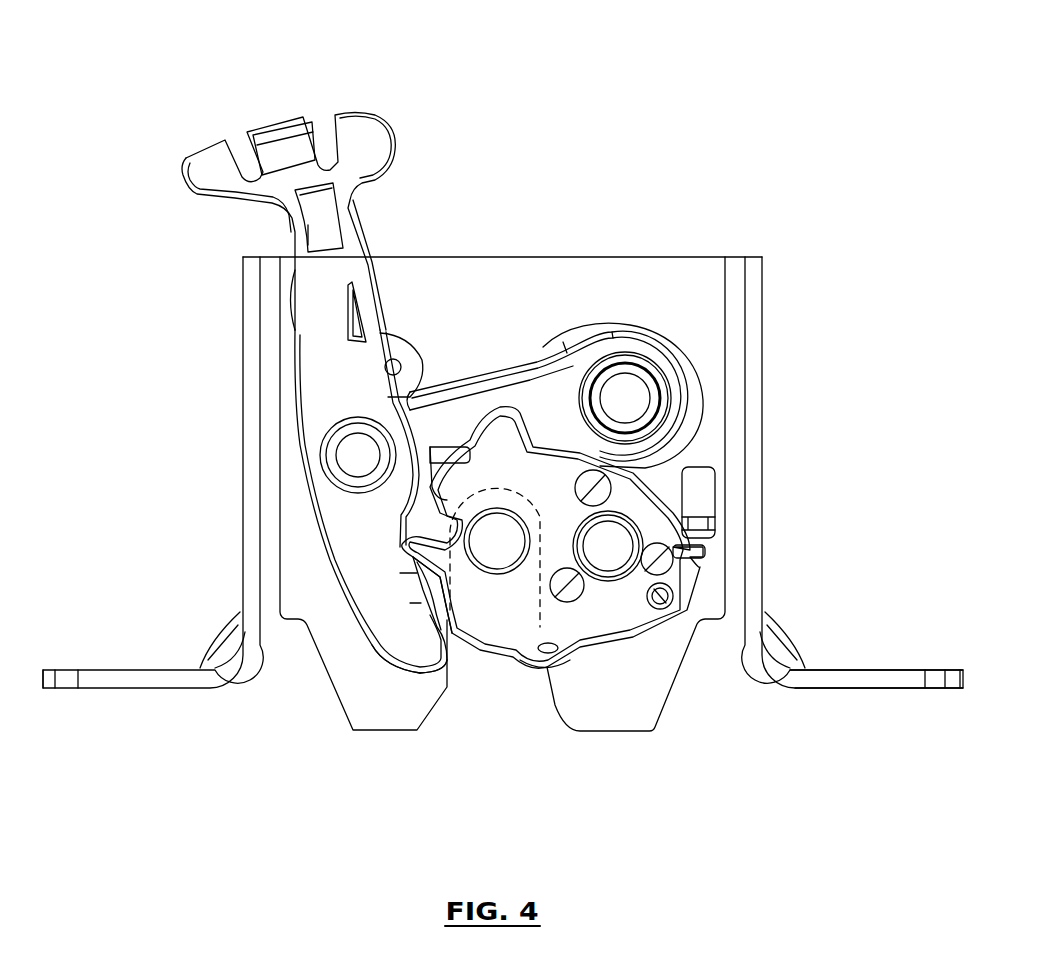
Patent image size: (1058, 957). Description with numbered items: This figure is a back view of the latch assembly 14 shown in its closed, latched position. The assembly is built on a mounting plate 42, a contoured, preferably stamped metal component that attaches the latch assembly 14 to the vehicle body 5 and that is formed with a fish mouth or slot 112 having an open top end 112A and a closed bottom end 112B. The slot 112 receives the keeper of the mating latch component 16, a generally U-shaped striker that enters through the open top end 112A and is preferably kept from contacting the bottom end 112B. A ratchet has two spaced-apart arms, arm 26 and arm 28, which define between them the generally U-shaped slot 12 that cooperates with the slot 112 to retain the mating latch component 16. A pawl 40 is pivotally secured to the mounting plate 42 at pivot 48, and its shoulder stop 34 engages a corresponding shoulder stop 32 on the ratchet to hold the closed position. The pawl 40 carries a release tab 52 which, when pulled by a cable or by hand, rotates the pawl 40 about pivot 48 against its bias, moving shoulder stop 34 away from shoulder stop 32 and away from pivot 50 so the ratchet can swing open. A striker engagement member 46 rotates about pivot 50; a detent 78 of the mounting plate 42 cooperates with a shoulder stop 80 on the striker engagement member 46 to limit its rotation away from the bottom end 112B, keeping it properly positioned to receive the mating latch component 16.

The vehicle body 5 is at (890, 670).
The slot 12 is at (311, 635).
The latch assembly 14 is at (503, 369).
The mating latch component 16 is at (483, 554).
The arm 26 is at (483, 433).
The arm 28 is at (433, 548).
The shoulder stop 32 is at (417, 553).
The shoulder stop 34 is at (428, 565).
The pawl 40 is at (314, 344).
The mounting plate 42 is at (665, 270).
The striker engagement member 46 is at (450, 497).
The pivot 48 is at (344, 468).
The pivot 50 is at (594, 559).
The release tab 52 is at (373, 137).
The detent 78 is at (703, 520).
The shoulder stop 80 is at (695, 553).
The slot 112 is at (597, 521).
The open top end 112A is at (522, 710).
The closed bottom end 112B is at (500, 466).